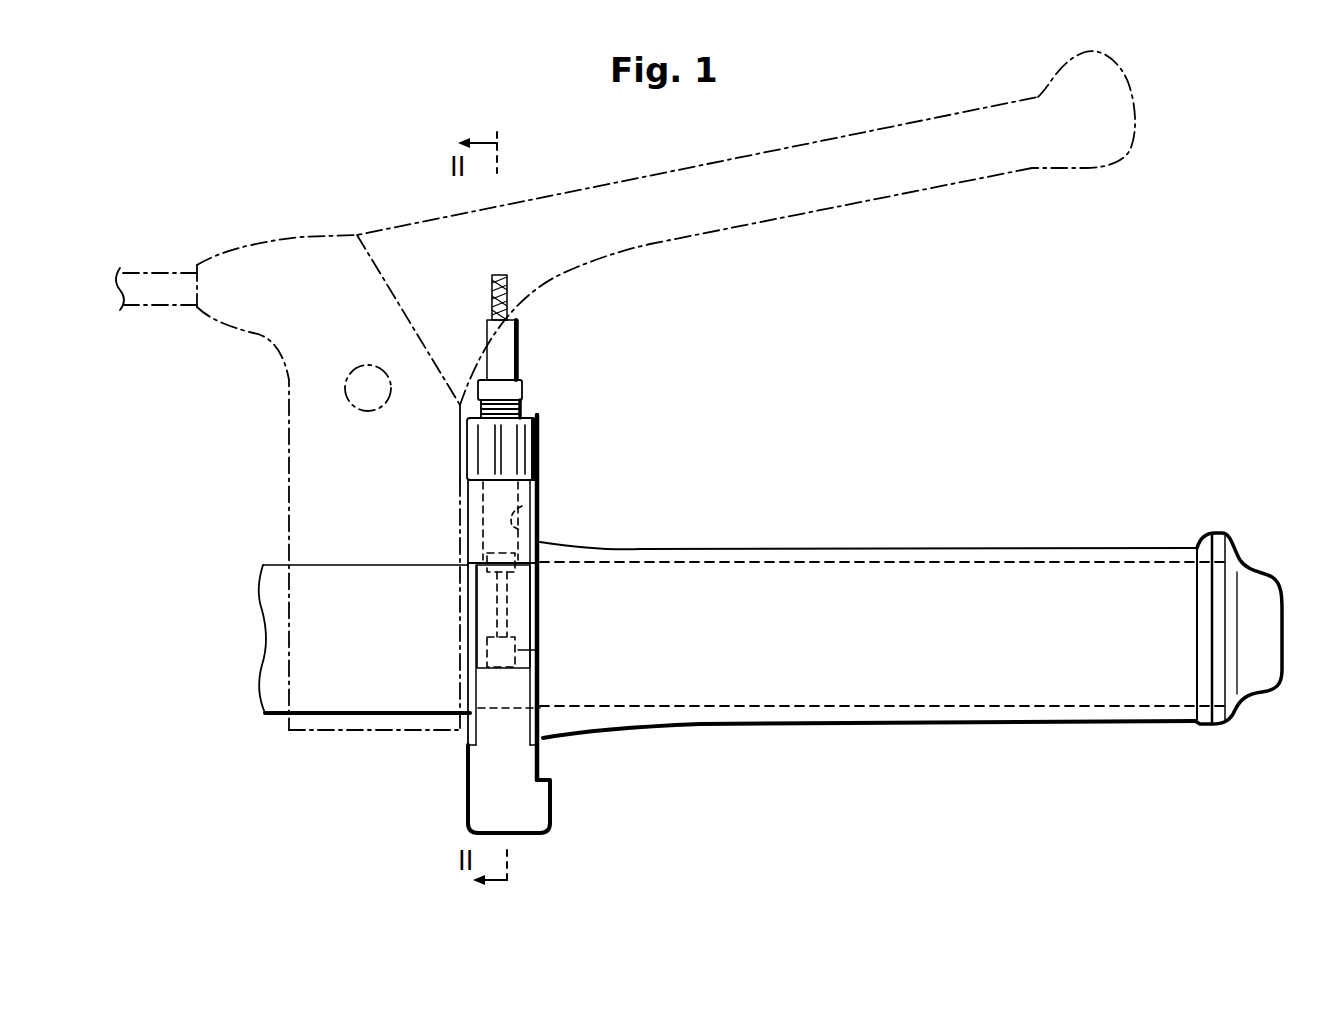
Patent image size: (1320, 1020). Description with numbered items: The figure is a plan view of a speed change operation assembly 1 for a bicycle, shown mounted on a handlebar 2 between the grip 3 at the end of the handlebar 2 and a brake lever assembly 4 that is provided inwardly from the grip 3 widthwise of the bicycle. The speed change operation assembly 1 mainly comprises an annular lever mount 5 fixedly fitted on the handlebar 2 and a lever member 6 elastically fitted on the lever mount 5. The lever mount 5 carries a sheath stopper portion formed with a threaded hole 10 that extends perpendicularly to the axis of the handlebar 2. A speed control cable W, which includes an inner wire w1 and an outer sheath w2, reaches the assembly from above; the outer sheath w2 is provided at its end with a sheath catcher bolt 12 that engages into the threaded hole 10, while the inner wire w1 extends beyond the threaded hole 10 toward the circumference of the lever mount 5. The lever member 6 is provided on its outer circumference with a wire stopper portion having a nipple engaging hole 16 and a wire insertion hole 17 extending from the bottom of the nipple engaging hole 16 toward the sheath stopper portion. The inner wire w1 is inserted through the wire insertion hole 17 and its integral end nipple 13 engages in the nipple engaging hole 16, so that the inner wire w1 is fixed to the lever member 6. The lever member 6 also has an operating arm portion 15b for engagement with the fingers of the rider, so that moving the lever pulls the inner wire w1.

The speed change operation assembly 1 is at (576, 631).
The handlebar 2 is at (345, 712).
The grip 3 is at (822, 724).
The brake lever assembly 4 is at (280, 483).
The lever mount 5 is at (548, 493).
The lever member 6 is at (545, 812).
The threaded hole 10 is at (546, 522).
The sheath catcher bolt 12 is at (538, 442).
The end nipple 13 is at (532, 650).
The operating arm portion 15b is at (525, 836).
The nipple engaging hole 16 is at (500, 667).
The wire insertion hole 17 is at (505, 598).
The inner wire w1 is at (507, 285).
The outer sheath w2 is at (518, 353).
The speed control cable W is at (578, 327).